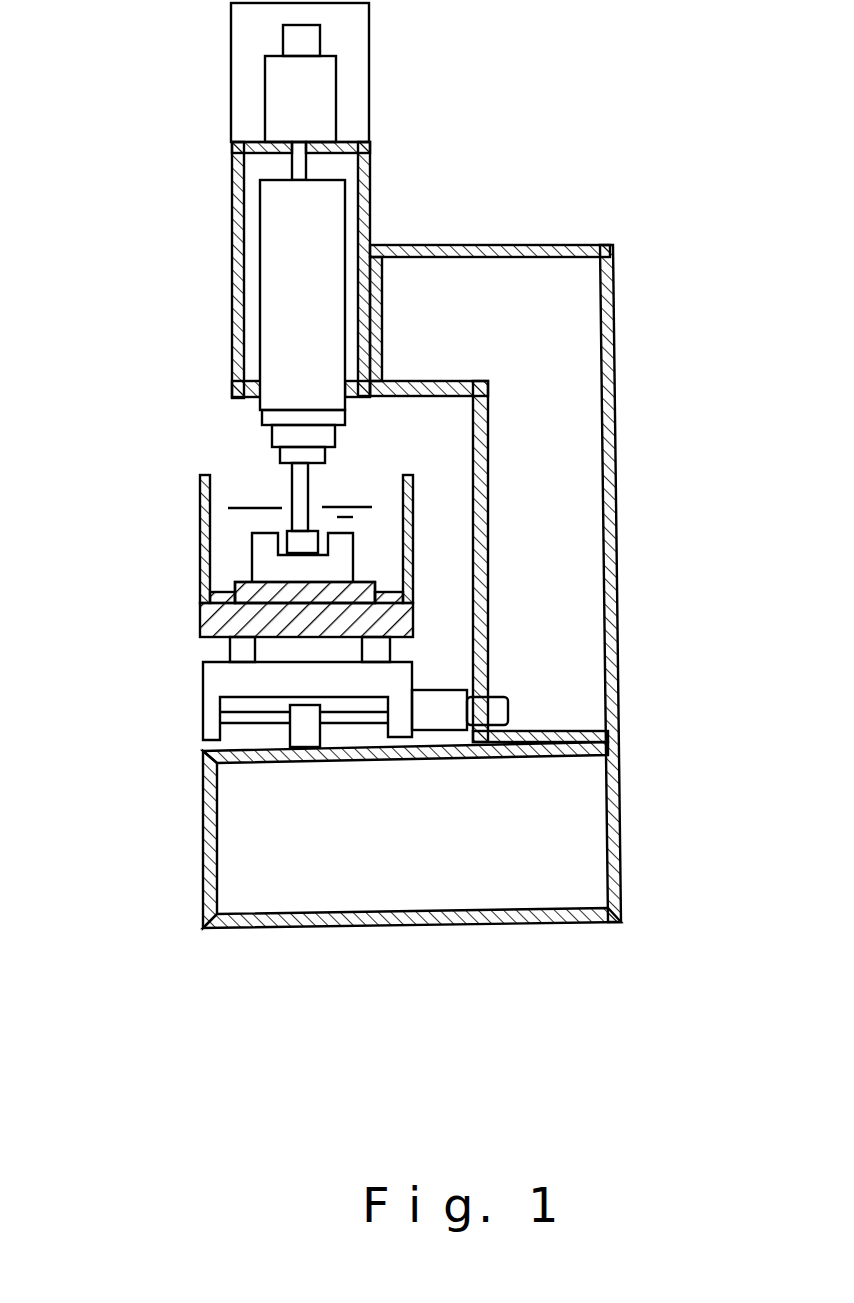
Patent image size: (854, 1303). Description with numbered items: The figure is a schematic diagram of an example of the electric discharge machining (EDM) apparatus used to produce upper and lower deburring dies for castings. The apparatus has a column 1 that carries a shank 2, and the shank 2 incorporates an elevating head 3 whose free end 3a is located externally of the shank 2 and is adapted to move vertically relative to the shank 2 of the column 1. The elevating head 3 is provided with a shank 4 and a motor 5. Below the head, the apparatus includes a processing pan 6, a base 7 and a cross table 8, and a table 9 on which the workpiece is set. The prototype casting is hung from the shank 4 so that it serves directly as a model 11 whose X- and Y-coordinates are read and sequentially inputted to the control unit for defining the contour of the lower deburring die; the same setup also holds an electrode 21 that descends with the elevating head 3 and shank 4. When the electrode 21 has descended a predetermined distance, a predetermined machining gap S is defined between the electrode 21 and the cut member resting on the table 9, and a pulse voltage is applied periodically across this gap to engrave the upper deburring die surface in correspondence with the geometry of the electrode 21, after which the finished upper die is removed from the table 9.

The column 1 is at (575, 303).
The shank 2 is at (370, 183).
The elevating head 3 is at (285, 237).
The free end 3a is at (287, 457).
The shank 4 is at (200, 526).
The motor 5 is at (313, 77).
The processing pan 6 is at (413, 526).
The base 7 is at (580, 840).
The cross table 8 is at (205, 727).
The table 9 is at (413, 612).
The model 11 is at (305, 543).
The electrode 21 is at (219, 637).
The machining gap S is at (307, 552).